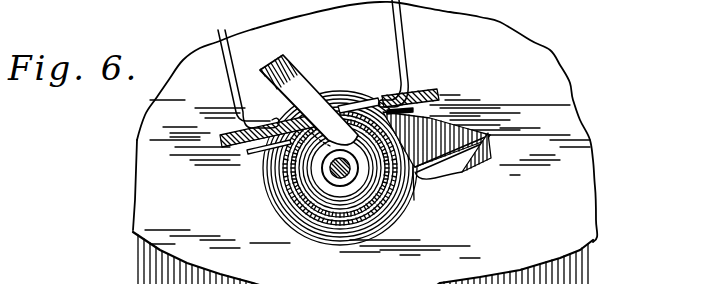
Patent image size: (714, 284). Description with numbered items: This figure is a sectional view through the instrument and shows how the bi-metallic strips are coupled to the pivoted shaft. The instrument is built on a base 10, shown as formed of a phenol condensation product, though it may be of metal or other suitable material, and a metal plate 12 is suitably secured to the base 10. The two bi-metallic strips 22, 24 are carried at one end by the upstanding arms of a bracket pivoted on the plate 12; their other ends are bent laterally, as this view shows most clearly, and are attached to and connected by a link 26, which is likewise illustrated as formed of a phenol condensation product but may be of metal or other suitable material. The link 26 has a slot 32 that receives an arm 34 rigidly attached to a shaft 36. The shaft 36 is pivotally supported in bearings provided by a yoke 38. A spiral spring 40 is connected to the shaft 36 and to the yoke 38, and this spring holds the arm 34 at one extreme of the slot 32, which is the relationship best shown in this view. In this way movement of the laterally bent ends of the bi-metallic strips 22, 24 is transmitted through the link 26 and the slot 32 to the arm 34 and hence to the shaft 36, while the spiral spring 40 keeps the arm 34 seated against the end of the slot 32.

The base 10 is at (573, 265).
The metal plate 12 is at (593, 163).
The bi-metallic strip 22 is at (231, 66).
The bi-metallic strip 24 is at (405, 33).
The link 26 is at (434, 93).
The slot 32 is at (366, 106).
The arm 34 is at (281, 58).
The shaft 36 is at (330, 172).
The yoke 38 is at (486, 162).
The spiral spring 40 is at (400, 215).